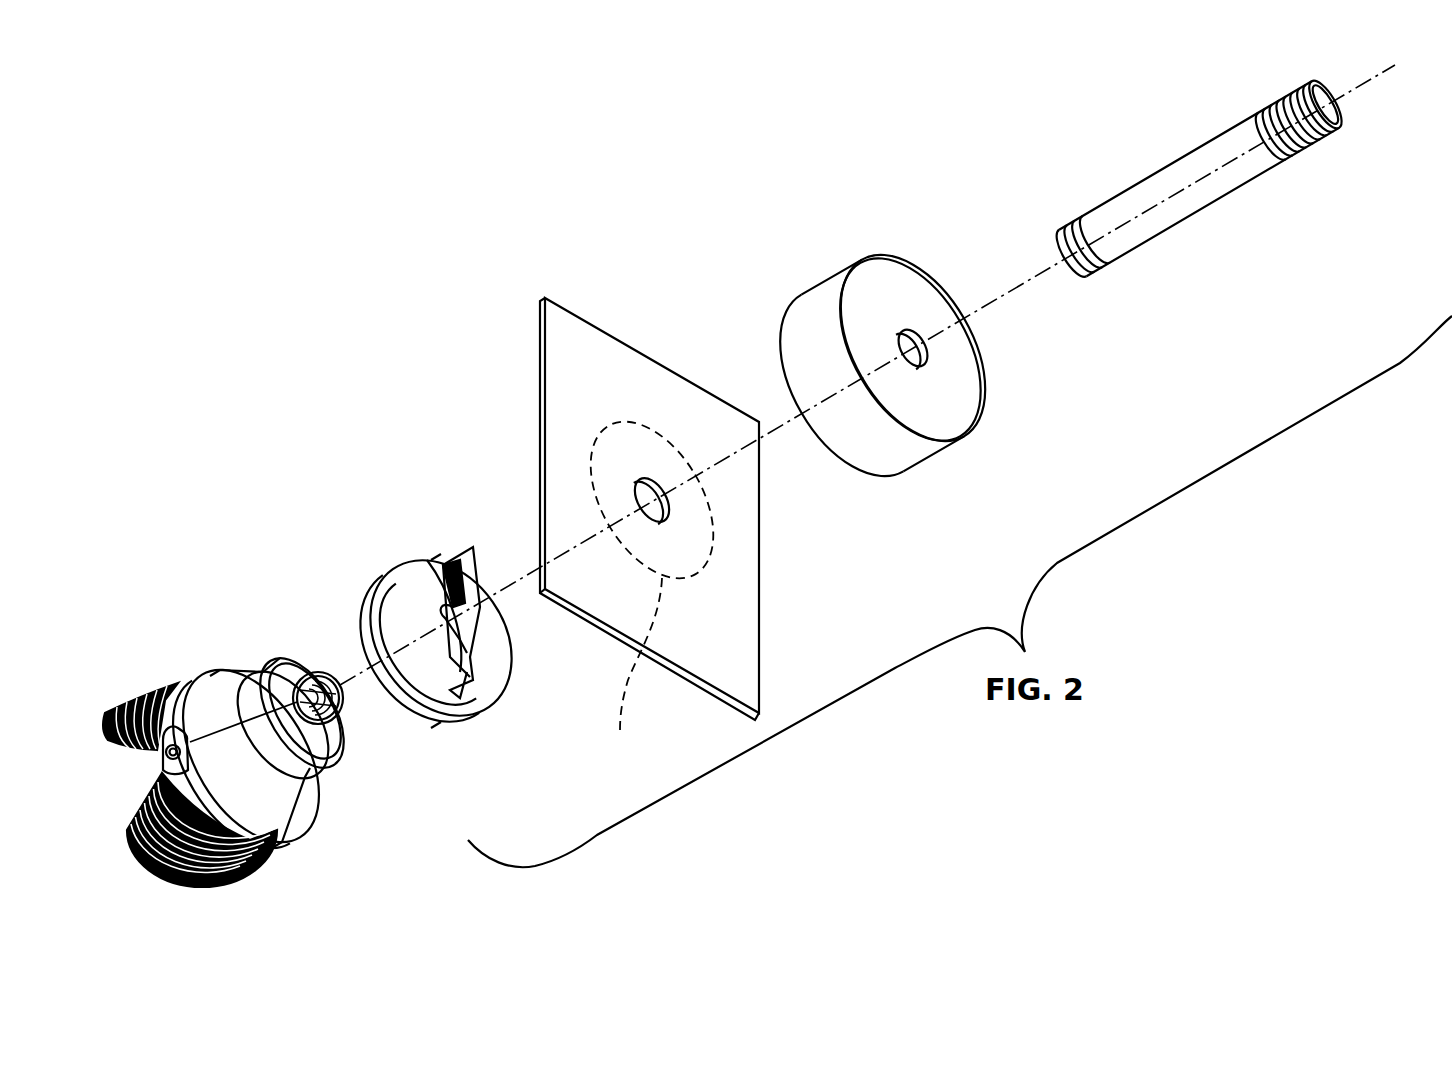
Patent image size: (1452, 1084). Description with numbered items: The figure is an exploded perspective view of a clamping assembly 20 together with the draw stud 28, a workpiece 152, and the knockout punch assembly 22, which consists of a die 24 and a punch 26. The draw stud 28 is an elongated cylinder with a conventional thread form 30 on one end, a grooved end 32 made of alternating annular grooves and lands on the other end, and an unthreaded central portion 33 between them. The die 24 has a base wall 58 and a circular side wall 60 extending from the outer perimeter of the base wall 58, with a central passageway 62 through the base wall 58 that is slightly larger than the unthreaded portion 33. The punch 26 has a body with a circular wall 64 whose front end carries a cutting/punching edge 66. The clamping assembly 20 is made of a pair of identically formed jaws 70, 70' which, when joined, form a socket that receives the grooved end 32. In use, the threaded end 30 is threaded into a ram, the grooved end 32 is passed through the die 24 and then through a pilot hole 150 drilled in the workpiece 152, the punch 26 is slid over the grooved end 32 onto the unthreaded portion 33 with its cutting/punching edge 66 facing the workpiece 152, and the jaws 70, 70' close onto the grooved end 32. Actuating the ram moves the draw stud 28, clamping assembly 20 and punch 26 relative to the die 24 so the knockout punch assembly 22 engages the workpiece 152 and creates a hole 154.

The clamping assembly 20 is at (229, 790).
The knockout punch assembly 22 is at (392, 518).
The die 24 is at (888, 346).
The punch 26 is at (414, 613).
The draw stud 28 is at (1207, 187).
The thread form 30 is at (1318, 140).
The grooved end 32 is at (1108, 260).
The central portion 33 is at (1228, 180).
The base wall 58 is at (882, 280).
The circular side wall 60 is at (805, 307).
The central passageway 62 is at (917, 335).
The circular wall 64 is at (392, 637).
The cutting/punching edge 66 is at (474, 546).
The jaw 70 is at (140, 687).
The jaw 70' is at (202, 858).
The pilot hole 150 is at (664, 506).
The workpiece 152 is at (701, 532).
The hole 154 is at (651, 584).